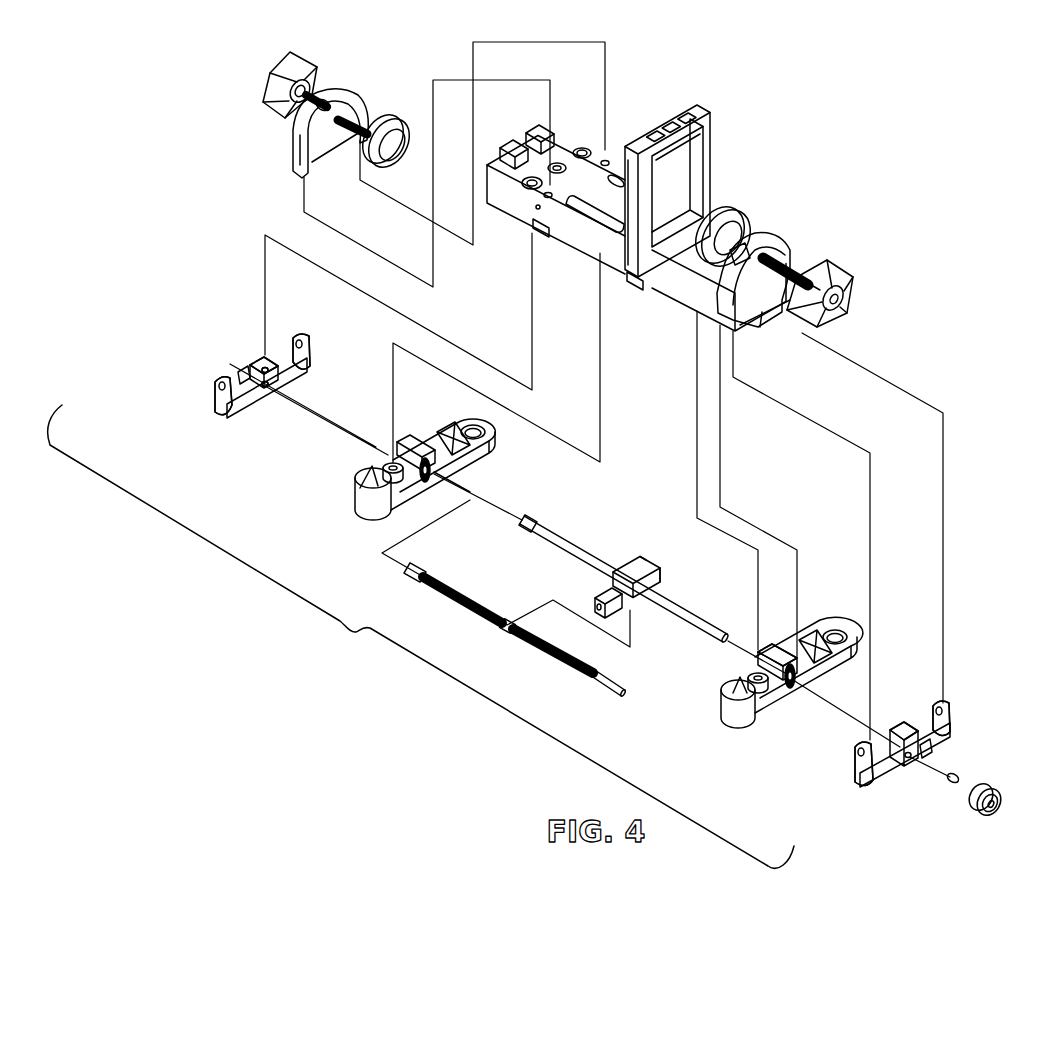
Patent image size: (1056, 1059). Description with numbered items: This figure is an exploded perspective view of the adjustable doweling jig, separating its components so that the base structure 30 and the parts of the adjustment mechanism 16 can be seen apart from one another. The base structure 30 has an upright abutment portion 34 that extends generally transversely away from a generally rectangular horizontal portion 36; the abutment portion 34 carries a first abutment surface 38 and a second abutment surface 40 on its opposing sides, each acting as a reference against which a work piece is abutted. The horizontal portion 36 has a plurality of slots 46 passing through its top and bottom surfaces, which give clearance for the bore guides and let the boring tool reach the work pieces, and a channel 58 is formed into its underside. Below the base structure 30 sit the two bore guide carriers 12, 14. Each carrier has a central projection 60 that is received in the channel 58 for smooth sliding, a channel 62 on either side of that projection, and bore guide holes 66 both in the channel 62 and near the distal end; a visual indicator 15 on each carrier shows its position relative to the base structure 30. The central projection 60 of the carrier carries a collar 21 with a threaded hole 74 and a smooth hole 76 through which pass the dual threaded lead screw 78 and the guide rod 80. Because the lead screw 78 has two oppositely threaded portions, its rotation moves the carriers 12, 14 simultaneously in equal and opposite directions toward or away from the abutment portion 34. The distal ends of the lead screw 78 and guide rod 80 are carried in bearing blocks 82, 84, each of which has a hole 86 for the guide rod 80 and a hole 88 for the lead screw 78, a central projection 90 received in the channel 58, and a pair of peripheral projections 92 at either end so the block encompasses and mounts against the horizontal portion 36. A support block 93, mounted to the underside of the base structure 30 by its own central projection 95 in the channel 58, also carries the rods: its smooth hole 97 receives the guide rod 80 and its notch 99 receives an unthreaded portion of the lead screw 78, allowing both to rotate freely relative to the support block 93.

The bore guide carrier 12 is at (412, 402).
The bore guide carrier 14 is at (821, 672).
The visual indicator 15 is at (370, 476).
The adjustment mechanism 16 is at (421, 636).
The collar 21 is at (790, 695).
The base structure 30 is at (670, 226).
The abutment portion 34 is at (690, 110).
The horizontal portion 36 is at (663, 280).
The first abutment surface 38 is at (637, 133).
The second abutment surface 40 is at (697, 203).
The slots 46 is at (577, 212).
The channel 58 is at (772, 320).
The central projection 60 is at (778, 658).
The channel 62 is at (427, 432).
The bore guide hole 66 is at (836, 628).
The threaded hole 74 is at (473, 502).
The smooth hole 76 is at (435, 470).
The dual threaded lead screw 78 is at (513, 638).
The guide rod 80 is at (592, 550).
The bearing block 82 is at (222, 401).
The bearing block 84 is at (950, 721).
The hole 86 is at (262, 377).
The hole 88 is at (263, 387).
The central projection 90 is at (262, 358).
The peripheral projections 92 is at (300, 336).
The support block 93 is at (706, 591).
The central projection 95 is at (628, 570).
The smooth hole 97 is at (657, 567).
The notch 99 is at (612, 606).